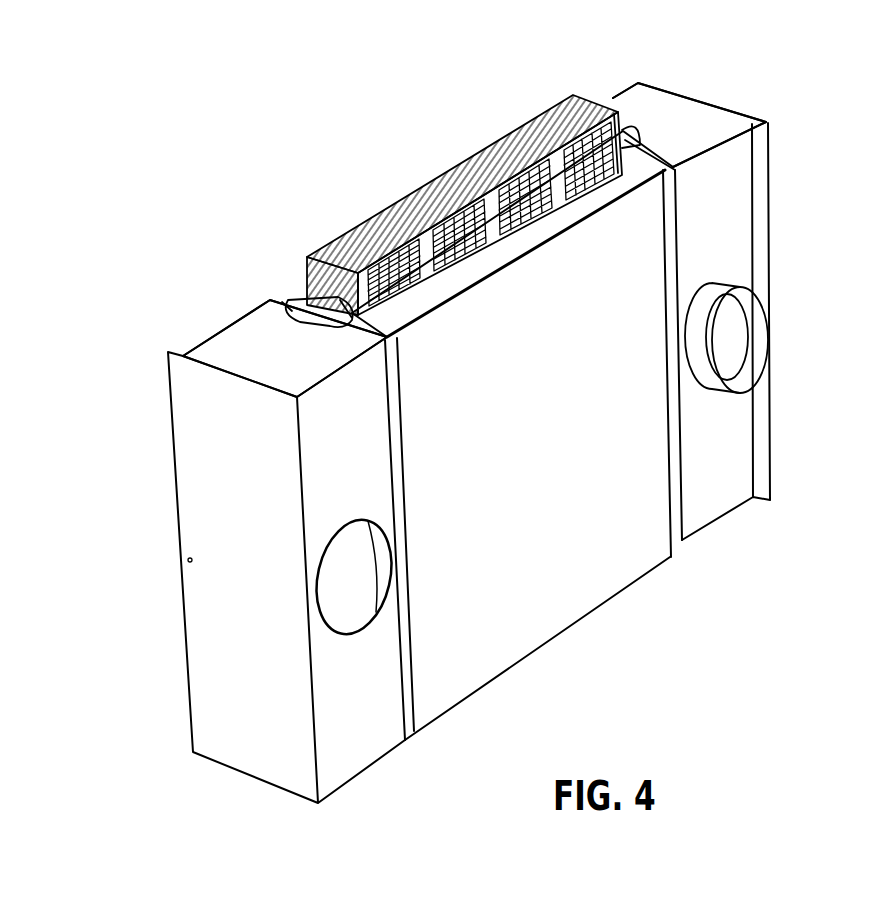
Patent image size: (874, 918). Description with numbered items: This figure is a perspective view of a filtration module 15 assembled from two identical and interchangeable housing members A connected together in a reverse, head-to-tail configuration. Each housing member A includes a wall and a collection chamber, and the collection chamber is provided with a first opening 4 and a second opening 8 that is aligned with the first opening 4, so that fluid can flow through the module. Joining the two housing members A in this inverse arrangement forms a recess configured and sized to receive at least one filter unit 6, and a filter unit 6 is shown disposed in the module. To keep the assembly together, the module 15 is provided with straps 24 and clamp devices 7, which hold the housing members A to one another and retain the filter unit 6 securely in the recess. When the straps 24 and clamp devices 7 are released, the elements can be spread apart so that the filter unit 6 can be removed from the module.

The first opening 4 is at (748, 356).
The filter unit 6 is at (362, 243).
The clamp device 7 is at (290, 302).
The second opening 8 is at (337, 607).
The filtration module 15 is at (147, 567).
The strap 24 is at (412, 424).
The housing member A is at (233, 345).